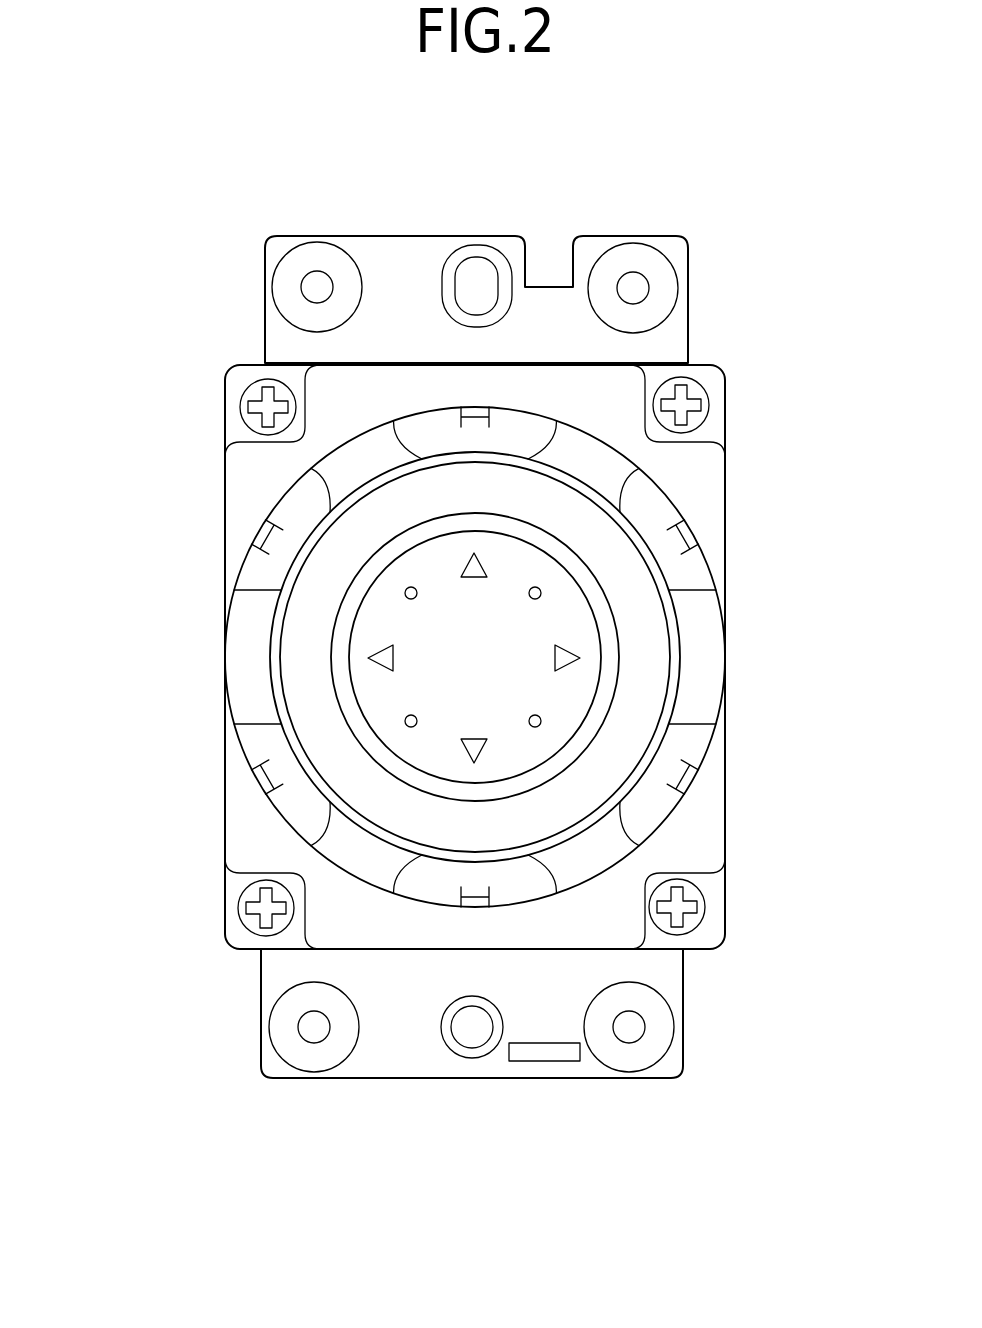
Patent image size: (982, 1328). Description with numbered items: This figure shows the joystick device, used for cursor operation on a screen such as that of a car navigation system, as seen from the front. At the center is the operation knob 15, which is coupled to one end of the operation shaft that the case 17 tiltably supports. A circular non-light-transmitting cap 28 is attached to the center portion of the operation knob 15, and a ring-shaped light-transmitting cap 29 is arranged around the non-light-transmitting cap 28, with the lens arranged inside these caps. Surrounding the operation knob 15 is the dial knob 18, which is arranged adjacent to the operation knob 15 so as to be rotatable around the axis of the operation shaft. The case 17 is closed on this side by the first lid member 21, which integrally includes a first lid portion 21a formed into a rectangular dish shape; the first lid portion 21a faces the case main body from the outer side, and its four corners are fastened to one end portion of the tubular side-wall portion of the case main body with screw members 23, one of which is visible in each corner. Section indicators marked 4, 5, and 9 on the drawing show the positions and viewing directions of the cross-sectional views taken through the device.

The operation knob 15 is at (645, 647).
The case 17 is at (727, 753).
The dial knob 18 is at (692, 567).
The first lid member 21 is at (735, 450).
The first lid portion 21a is at (243, 490).
The screw members 23 is at (262, 393).
The non-light-transmitting cap 28 is at (505, 567).
The light-transmitting cap 29 is at (605, 693).
The section line 4- 4 is at (475, 155).
The section line 5- 5 is at (142, 370).
The section line 9- 9 is at (182, 993).